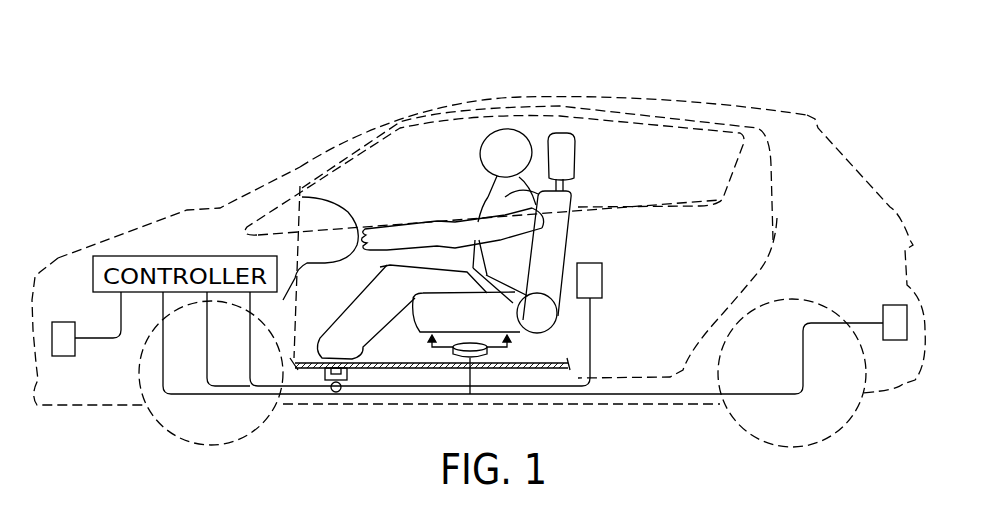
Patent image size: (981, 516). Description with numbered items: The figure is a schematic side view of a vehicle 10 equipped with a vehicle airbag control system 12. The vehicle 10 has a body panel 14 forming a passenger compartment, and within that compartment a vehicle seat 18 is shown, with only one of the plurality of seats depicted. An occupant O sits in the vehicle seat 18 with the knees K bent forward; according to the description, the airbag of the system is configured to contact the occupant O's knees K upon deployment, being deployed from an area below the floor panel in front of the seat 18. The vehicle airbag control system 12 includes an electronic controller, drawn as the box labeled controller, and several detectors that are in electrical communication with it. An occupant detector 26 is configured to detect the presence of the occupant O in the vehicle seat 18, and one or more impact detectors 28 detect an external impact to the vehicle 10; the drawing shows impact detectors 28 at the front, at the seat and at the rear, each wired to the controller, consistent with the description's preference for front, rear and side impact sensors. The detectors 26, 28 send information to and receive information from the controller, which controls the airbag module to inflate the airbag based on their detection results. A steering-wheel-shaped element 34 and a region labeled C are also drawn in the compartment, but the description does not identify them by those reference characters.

The vehicle 10 is at (771, 42).
The vehicle airbag control system 12 is at (297, 97).
The body panel 14 is at (767, 110).
The vehicle seat 18 is at (578, 152).
The occupant detector 26 is at (480, 340).
The impact detector 28 is at (63, 356).
The steering wheel 34 is at (338, 200).
The passenger cabin C is at (436, 168).
The occupant O is at (527, 128).
The knees K is at (381, 267).